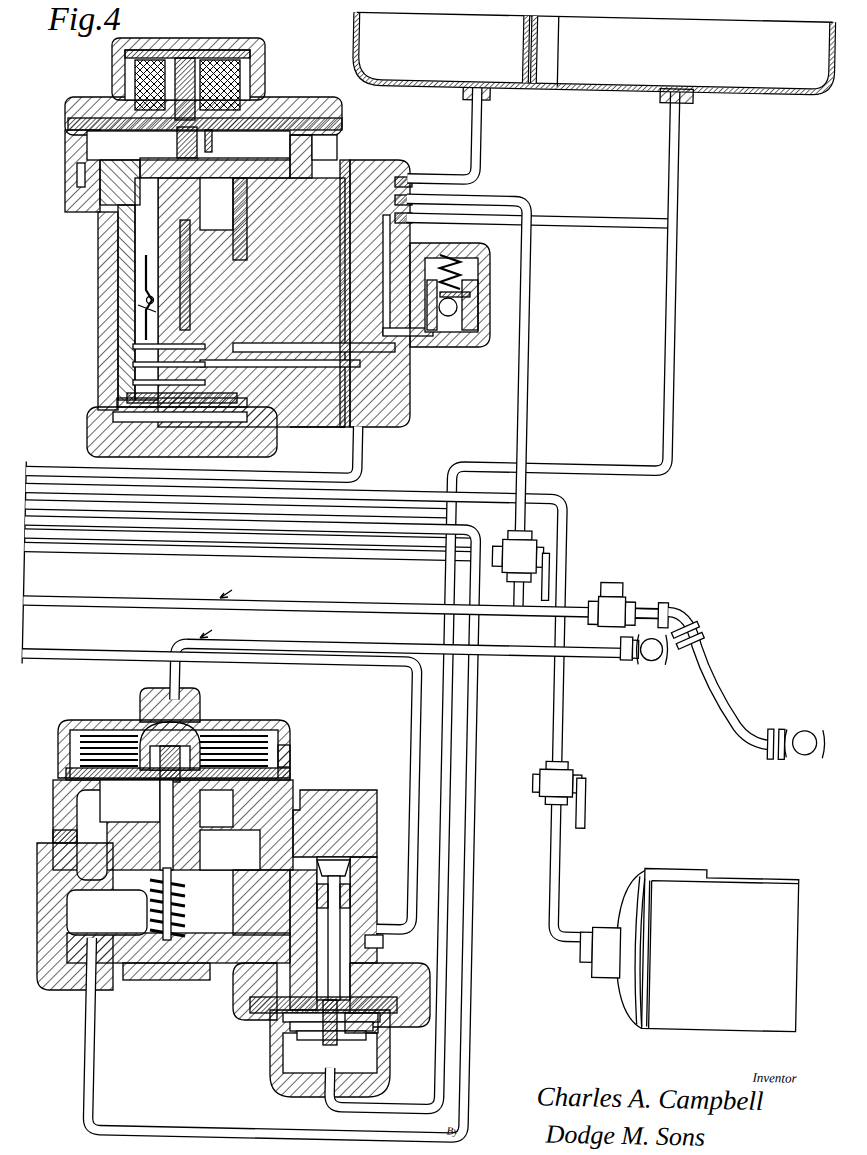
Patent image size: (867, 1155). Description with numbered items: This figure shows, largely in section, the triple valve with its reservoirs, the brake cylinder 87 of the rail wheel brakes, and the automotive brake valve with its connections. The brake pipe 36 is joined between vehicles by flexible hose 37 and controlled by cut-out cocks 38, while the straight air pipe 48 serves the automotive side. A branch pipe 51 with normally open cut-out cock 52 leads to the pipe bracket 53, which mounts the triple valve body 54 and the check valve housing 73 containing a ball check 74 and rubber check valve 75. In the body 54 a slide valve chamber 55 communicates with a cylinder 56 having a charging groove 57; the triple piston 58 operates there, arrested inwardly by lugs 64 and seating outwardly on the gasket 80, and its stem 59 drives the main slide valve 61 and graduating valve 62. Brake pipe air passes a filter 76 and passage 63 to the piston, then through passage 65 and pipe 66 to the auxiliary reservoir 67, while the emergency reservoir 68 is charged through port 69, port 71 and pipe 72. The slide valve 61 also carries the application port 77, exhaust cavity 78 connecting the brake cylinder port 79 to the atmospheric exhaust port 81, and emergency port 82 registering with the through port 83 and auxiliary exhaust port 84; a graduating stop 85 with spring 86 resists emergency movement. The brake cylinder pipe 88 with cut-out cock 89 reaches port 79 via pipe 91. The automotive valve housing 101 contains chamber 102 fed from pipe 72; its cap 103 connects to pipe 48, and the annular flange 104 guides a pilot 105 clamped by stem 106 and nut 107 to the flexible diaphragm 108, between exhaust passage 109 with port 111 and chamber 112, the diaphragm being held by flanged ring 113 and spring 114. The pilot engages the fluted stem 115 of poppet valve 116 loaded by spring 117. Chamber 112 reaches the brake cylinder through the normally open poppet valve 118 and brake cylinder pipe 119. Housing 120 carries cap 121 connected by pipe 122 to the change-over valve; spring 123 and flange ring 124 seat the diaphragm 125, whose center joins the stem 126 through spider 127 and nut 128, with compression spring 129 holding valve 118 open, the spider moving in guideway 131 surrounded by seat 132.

The brake pipe 36 is at (390, 606).
The flexible hose 37 is at (722, 685).
The cut-out cock 38 is at (618, 603).
The straight air pipe 48 is at (170, 670).
The branch pipe 51 is at (528, 352).
The cut-out cock 52 is at (542, 547).
The pipe bracket 53 is at (398, 177).
The triple valve body 54 is at (126, 290).
The slide valve chamber 55 is at (140, 240).
The cylinder 56 is at (68, 138).
The charging groove 57 is at (78, 208).
The triple piston 58 is at (100, 162).
The stem 59 is at (136, 364).
The main slide valve 61 is at (146, 325).
The graduating valve 62 is at (146, 305).
The passage 63 is at (305, 108).
The lugs 64 is at (110, 200).
The passage 65 is at (332, 175).
The pipe 66 is at (484, 122).
The auxiliary reservoir 67 is at (593, 52).
The emergency reservoir 68 is at (620, 60).
The port 69 is at (222, 185).
The port 71 is at (362, 210).
The pipe 72 is at (668, 203).
The check valve housing 73 is at (465, 344).
The ball check 74 is at (458, 308).
The rubber check valve 75 is at (480, 262).
The filter 76 is at (262, 78).
The application port 77 is at (136, 382).
The exhaust cavity 78 is at (136, 346).
The brake cylinder port 79 is at (318, 430).
The gasket 80 is at (98, 105).
The atmospheric exhaust port 81 is at (385, 350).
The emergency port 82 is at (146, 258).
The through port 83 is at (146, 275).
The auxiliary exhaust port 84 is at (255, 175).
The graduating stop 85 is at (177, 143).
The spring 86 is at (207, 135).
The brake cylinder 87 is at (740, 880).
The brake cylinder pipe 88 is at (398, 492).
The cut-out cock 89 is at (570, 780).
The pipe 91 is at (52, 468).
The housing 101 is at (65, 868).
The chamber 102 is at (107, 912).
The cap 103 is at (268, 725).
The annular flange 104 is at (282, 776).
The pilot 105 is at (213, 812).
The stem 106 is at (180, 745).
The nut 107 is at (192, 762).
The flexible diaphragm 108 is at (125, 768).
The exhaust passage 109 is at (78, 808).
The port 111 is at (58, 835).
The chamber 112 is at (230, 865).
The flanged ring 113 is at (288, 758).
The coil compression spring 114 is at (285, 740).
The fluted stem 115 is at (158, 803).
The poppet valve 116 is at (186, 895).
The coil compression spring 117 is at (176, 918).
The poppet valve 118 is at (333, 866).
The brake cylinder pipe 119 is at (333, 662).
The housing 120 is at (375, 815).
The cap 121 is at (390, 1068).
The pipe 122 is at (157, 535).
The spring 123 is at (378, 1014).
The flange ring 124 is at (238, 1000).
The flexible diaphragm 125 is at (270, 1015).
The stem 126 is at (377, 903).
The spider 127 is at (383, 947).
The nut 128 is at (280, 1040).
The compression spring 129 is at (283, 1066).
The guideway 131 is at (255, 950).
The seat 132 is at (410, 968).